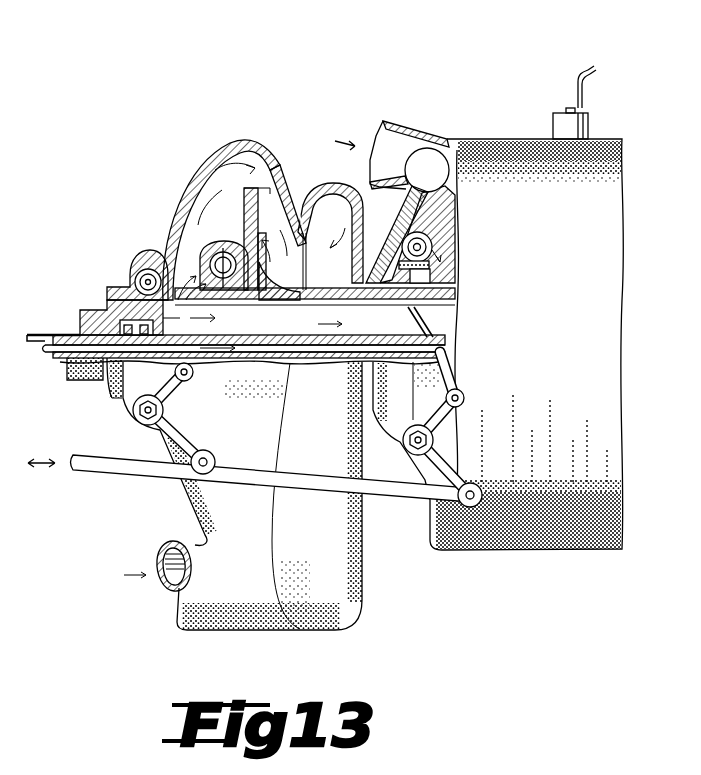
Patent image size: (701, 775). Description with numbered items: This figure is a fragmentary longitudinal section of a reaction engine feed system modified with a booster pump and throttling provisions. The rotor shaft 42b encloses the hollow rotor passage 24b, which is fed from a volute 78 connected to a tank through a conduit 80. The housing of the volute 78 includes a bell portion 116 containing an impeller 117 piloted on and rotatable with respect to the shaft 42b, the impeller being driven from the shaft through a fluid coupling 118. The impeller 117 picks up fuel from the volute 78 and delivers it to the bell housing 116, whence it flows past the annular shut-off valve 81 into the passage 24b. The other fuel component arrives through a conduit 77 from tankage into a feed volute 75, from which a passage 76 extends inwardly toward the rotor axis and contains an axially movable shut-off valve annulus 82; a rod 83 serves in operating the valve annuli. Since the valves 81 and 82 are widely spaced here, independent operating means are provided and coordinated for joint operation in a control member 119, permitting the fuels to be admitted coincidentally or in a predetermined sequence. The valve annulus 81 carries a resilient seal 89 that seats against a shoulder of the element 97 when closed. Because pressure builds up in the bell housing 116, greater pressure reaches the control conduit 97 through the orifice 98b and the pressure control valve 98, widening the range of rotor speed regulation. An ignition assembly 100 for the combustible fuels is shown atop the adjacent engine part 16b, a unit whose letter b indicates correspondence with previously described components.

The main body 16b is at (529, 344).
The ignition assembly 100 is at (590, 122).
The conduit 77 is at (388, 128).
The feed volute 75 is at (427, 170).
The passage 76 is at (450, 236).
The shut-off valve annulus 82 is at (432, 264).
The rod 83 is at (393, 224).
The volute 78 is at (362, 578).
The impeller 117 is at (280, 185).
The bell portion (bell housing) 116 is at (176, 199).
The fluid coupling 118 is at (210, 276).
The shut-off valve annulus 81 is at (186, 266).
The orifice 98b is at (197, 320).
The rotor shaft 42b is at (264, 312).
The rotor passage 24b is at (375, 322).
The control conduit 97 is at (236, 364).
The pressure control valve 98 is at (46, 356).
The resilient seal 89 is at (112, 318).
The control member 119 is at (76, 472).
The conduit 80 is at (156, 584).